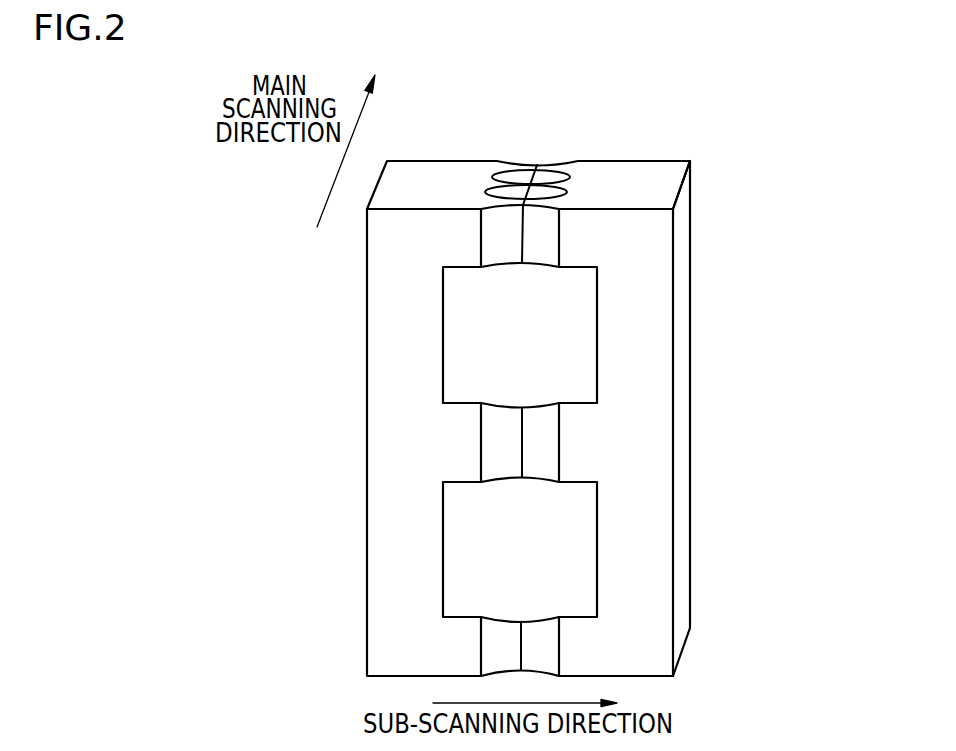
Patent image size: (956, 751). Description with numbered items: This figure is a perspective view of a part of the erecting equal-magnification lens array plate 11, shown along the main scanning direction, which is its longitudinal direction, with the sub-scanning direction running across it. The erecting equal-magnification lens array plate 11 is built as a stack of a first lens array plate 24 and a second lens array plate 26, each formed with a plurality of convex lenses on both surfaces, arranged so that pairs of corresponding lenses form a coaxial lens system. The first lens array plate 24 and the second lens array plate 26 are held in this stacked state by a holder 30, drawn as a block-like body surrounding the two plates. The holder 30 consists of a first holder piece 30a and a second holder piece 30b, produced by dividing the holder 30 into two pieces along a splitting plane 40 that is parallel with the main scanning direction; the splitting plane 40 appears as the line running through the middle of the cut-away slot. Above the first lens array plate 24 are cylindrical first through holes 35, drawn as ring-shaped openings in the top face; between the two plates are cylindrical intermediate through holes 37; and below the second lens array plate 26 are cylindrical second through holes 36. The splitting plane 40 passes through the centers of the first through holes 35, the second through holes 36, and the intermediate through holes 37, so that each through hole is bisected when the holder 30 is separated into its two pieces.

The erecting equal-magnification lens array plate 11 is at (650, 140).
The first lens array plate 24 is at (570, 312).
The second lens array plate 26 is at (570, 553).
The holder 30 is at (795, 163).
The first holder piece 30a is at (453, 193).
The second holder piece 30b is at (598, 183).
The first through holes 35 is at (520, 178).
The second through holes 36 is at (542, 637).
The intermediate through holes 37 is at (542, 438).
The splitting plane 40 is at (538, 177).